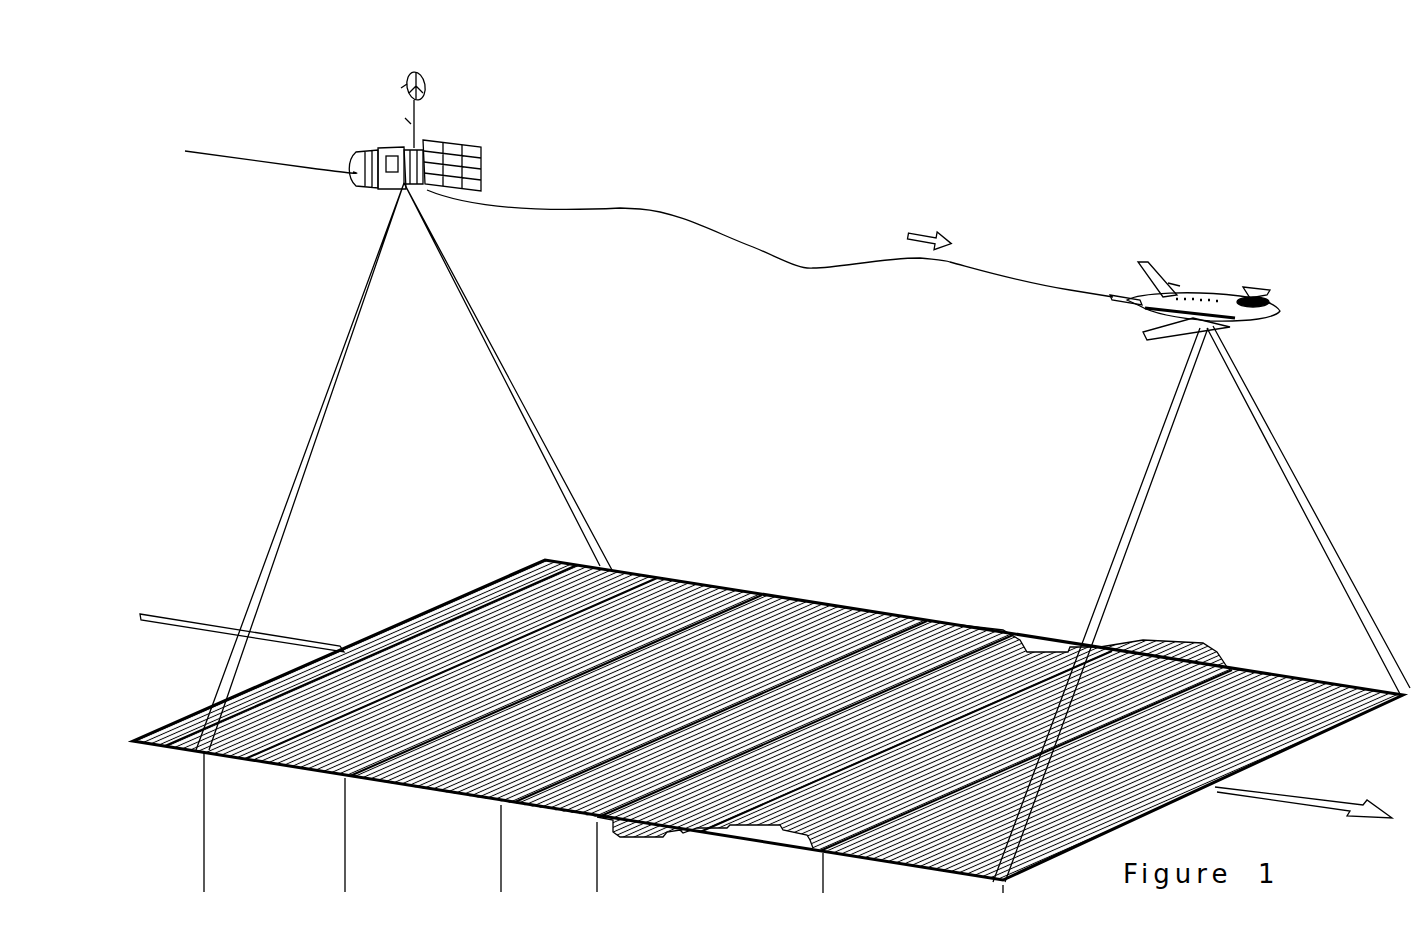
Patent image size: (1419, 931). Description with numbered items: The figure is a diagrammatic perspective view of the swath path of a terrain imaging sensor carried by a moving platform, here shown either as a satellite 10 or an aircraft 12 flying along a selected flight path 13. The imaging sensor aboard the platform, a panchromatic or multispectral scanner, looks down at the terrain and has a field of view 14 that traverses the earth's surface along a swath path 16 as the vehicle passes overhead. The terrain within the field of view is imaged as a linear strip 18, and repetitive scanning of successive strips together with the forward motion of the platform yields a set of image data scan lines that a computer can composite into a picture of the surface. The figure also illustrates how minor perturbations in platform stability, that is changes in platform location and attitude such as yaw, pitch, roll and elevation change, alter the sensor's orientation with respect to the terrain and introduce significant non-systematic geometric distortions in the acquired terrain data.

The satellite 10 is at (450, 147).
The aircraft 12 is at (1210, 292).
The flight path 13 is at (640, 209).
The field of view 14 is at (543, 462).
The swath path 16 is at (200, 628).
The linear strip 18 is at (1152, 812).